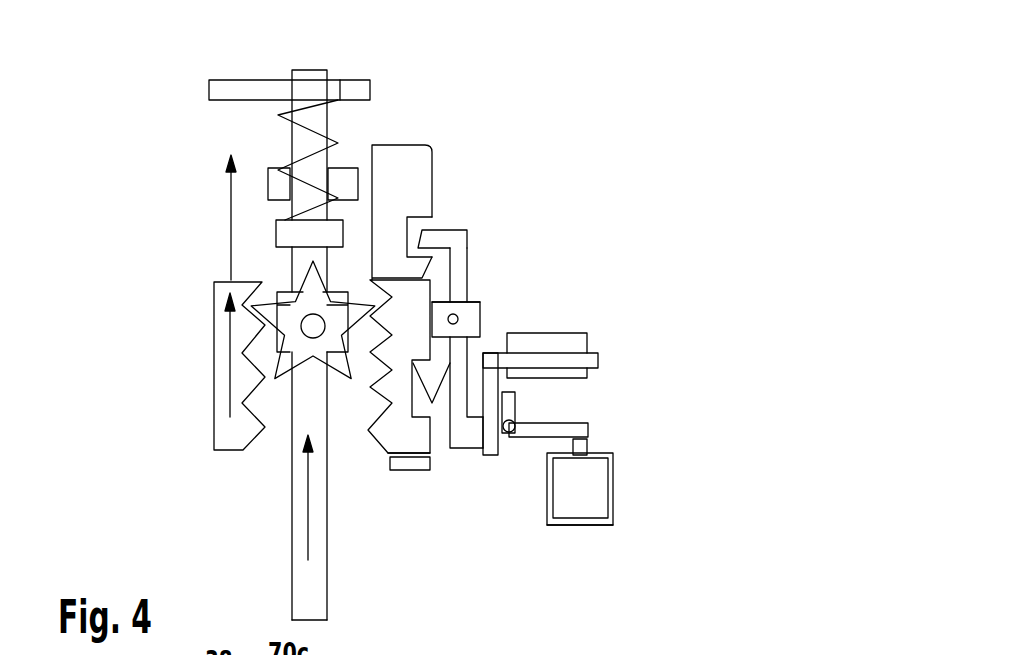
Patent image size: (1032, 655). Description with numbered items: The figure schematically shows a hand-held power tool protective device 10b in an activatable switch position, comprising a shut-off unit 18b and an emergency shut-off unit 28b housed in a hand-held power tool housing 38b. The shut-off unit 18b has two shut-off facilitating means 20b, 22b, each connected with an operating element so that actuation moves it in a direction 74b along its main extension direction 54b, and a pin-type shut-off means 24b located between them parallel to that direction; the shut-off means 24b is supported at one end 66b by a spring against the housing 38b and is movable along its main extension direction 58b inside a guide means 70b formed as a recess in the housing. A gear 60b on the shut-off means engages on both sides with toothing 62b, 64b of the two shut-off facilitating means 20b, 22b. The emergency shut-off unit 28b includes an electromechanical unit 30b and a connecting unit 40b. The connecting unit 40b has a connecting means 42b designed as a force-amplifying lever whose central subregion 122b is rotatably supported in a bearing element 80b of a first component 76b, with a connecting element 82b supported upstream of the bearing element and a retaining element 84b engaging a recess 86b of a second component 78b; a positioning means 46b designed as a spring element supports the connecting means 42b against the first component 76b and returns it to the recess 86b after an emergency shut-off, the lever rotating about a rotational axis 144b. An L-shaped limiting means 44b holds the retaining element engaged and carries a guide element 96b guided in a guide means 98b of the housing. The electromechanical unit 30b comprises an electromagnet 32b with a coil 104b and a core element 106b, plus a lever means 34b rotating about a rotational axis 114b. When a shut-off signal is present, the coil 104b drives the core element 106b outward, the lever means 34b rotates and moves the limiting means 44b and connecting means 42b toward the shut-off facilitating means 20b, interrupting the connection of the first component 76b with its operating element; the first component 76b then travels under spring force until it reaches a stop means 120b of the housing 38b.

The hand-held power tool protective device 10b is at (648, 566).
The shut-off unit 18b is at (272, 483).
The shut-off facilitating means 20b is at (348, 273).
The shut-off facilitating means 22b is at (222, 358).
The shut-off means 24b is at (292, 605).
The emergency shut-off unit 28b is at (473, 98).
The electromechanical unit 30b is at (569, 540).
The electromagnet 32b is at (634, 494).
The lever means 34b is at (572, 428).
The hand-held power tool housing 38b is at (224, 88).
The connecting unit 40b is at (495, 178).
The connecting means 42b is at (460, 347).
The limiting means 44b is at (485, 355).
The positioning means 46b is at (440, 395).
The main extension direction 54b is at (227, 408).
The main extension direction 58b is at (297, 462).
The gear 60b is at (263, 316).
The toothing 62b is at (380, 420).
The toothing 64b is at (253, 387).
The end 66b is at (278, 162).
The guide means 70b is at (289, 80).
The direction 74b is at (231, 207).
The first component 76b is at (403, 465).
The second component 78b is at (402, 158).
The bearing element 80b is at (467, 283).
The connecting element 82b is at (457, 387).
The retaining element 84b is at (442, 240).
The recess 86b is at (415, 227).
The guide element 96b is at (592, 362).
The guide means 98b is at (575, 338).
The coil 104b is at (593, 505).
The core element 106b is at (585, 445).
The rotational axis 114b is at (515, 422).
The stop means 120b is at (433, 456).
The central subregion 122b is at (470, 296).
The rotational axis 144b is at (460, 319).